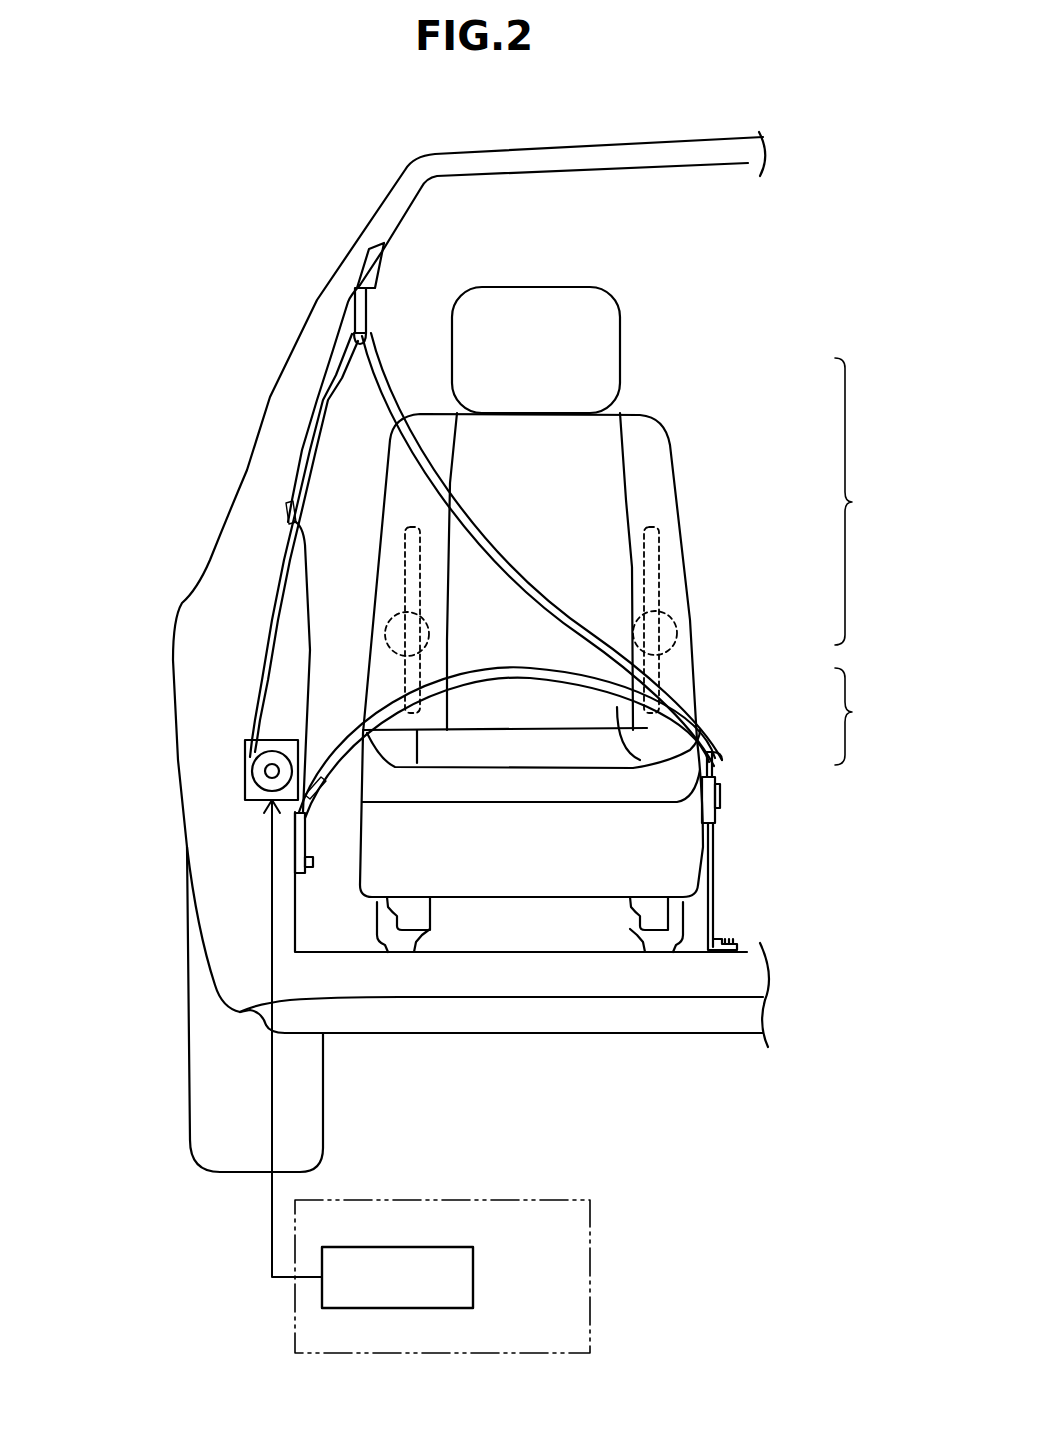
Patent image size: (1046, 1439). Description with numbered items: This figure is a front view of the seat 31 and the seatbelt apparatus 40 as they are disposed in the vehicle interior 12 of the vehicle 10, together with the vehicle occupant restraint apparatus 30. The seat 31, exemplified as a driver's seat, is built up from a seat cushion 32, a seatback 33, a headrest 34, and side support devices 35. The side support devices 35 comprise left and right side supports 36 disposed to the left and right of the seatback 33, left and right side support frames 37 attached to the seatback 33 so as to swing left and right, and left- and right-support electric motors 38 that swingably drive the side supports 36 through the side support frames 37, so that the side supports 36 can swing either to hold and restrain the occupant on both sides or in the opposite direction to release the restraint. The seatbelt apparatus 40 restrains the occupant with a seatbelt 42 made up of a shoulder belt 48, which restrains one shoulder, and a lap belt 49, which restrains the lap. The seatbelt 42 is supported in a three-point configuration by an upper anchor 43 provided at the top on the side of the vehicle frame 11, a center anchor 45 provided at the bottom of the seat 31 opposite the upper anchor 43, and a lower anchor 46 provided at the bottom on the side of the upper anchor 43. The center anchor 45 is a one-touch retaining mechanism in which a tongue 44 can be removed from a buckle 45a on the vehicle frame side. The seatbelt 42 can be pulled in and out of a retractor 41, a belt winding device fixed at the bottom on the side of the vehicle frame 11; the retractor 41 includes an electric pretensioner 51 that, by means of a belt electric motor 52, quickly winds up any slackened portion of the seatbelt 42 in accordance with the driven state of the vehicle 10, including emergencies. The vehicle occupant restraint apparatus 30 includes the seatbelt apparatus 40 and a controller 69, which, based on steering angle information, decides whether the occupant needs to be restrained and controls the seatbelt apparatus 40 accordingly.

The vehicle 10 is at (200, 112).
The vehicle frame 11 is at (376, 207).
The vehicle interior 12 is at (697, 233).
The vehicle occupant restraint apparatus 30 is at (484, 1076).
The seat 31 is at (502, 619).
The seat cushion 32 is at (503, 827).
The seatback 33 is at (469, 612).
The headrest 34 is at (602, 367).
The side support devices 35 is at (469, 586).
The side supports 36 is at (388, 497).
The side support frames 37 is at (400, 557).
The side-support electric motors 38 is at (400, 624).
The seatbelt apparatus 40 is at (481, 576).
The retractor 41 is at (183, 768).
The seatbelt 42 is at (596, 742).
The upper anchor 43 is at (353, 310).
The tongue 44 is at (773, 851).
The center anchor 45 is at (713, 863).
The buckle 45a is at (722, 797).
The lower anchor 46 is at (300, 830).
The shoulder belt 48 is at (680, 712).
The lap belt 49 is at (681, 760).
The electric pretensioner 51 is at (247, 797).
The belt electric motor 52 is at (253, 772).
The controller 69 is at (475, 1277).